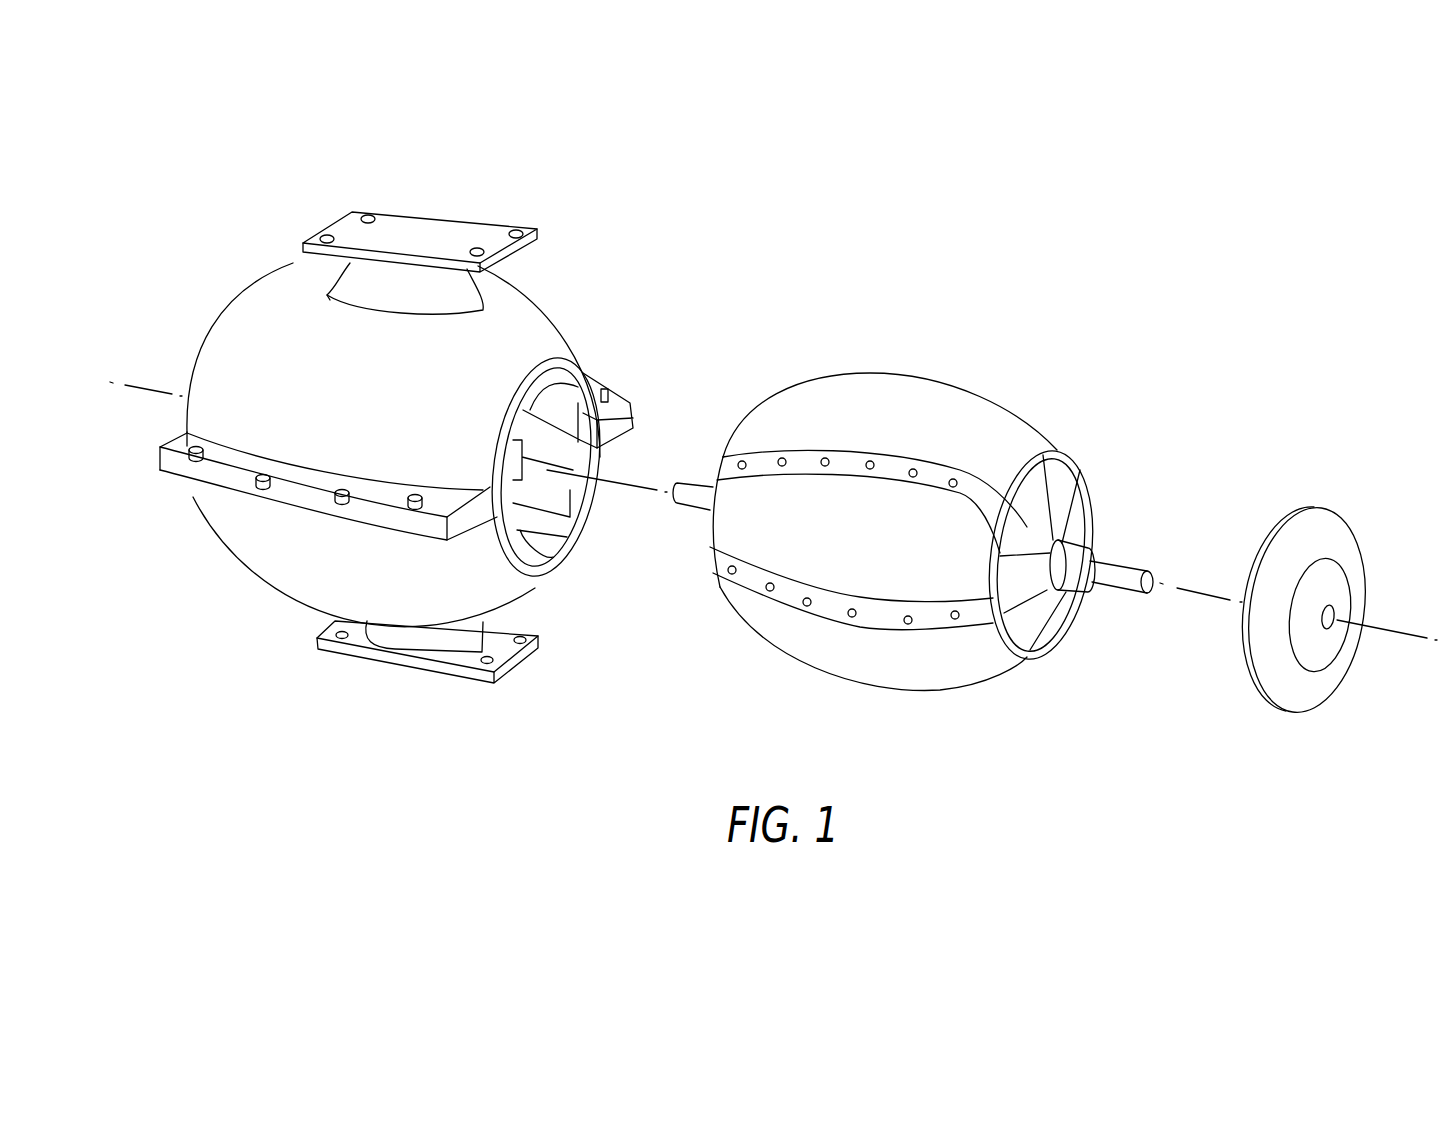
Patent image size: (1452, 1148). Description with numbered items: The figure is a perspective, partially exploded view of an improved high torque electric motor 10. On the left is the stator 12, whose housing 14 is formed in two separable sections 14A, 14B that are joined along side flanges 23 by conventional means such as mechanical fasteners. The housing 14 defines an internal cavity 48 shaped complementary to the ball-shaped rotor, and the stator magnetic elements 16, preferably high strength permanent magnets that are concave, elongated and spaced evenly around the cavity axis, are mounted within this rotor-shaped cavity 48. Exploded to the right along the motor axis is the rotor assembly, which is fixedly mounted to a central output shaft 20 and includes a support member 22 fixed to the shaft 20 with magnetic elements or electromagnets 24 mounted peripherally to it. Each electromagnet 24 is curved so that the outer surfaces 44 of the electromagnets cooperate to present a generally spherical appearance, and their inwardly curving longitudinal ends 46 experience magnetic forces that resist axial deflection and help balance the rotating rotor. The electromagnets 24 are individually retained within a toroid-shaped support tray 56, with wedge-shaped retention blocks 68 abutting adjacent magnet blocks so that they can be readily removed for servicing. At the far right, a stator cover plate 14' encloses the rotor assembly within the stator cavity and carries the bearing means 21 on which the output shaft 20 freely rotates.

The electric motor 10 is at (833, 232).
The stator 12 is at (459, 360).
The housing 14 is at (335, 416).
The separable section 14A is at (250, 317).
The separable section 14B is at (427, 583).
The stator cover plate 14' is at (1307, 566).
The magnetic elements 16 is at (557, 407).
The central output shaft 20 is at (1140, 565).
The bearing means 21 is at (1327, 618).
The support member 22 is at (1055, 642).
The side flanges 23 is at (375, 497).
The electromagnets 24 is at (970, 434).
The outer surface 44 is at (870, 441).
The longitudinal ends 46 is at (757, 423).
The internal cavity 48 is at (562, 452).
The support tray 56 is at (1087, 498).
The retention block 68 is at (782, 598).